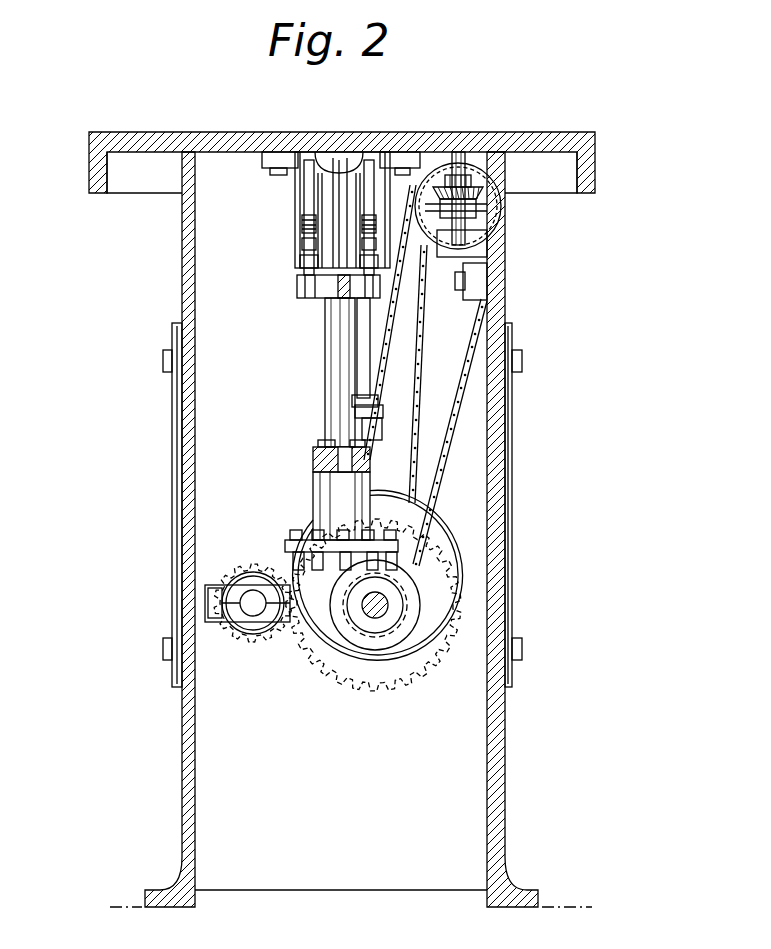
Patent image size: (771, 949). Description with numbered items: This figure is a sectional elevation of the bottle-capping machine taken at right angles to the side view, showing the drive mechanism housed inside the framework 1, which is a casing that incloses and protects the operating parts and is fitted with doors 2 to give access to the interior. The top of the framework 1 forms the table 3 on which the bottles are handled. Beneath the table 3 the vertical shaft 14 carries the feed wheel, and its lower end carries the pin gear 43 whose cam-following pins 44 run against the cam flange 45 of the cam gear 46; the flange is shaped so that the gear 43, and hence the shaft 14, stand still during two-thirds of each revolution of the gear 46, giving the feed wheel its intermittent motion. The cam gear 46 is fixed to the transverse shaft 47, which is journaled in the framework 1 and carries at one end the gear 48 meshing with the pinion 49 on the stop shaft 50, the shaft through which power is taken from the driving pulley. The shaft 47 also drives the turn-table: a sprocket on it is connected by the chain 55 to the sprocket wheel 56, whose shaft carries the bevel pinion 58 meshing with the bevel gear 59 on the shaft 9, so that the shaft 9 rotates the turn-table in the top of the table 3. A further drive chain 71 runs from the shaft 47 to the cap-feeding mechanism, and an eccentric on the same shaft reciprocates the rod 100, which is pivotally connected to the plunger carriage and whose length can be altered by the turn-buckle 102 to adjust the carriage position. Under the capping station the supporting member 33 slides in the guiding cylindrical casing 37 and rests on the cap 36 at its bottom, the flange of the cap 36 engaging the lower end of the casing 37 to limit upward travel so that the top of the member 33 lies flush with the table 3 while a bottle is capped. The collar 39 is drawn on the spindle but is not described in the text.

The framework 1 is at (498, 762).
The doors 2 is at (178, 583).
The table 3 is at (586, 148).
The shaft 9 is at (482, 232).
The shaft 14 is at (336, 361).
The supporting member 33 is at (301, 261).
The cap 36 is at (300, 270).
The guiding cylindrical casing 37 is at (301, 204).
The collar 39 is at (307, 299).
The gear 43 is at (291, 541).
The cam-following pins 44 is at (294, 558).
The cam flange 45 is at (408, 596).
The cam gear 46 is at (380, 622).
The transverse shaft 47 is at (390, 605).
The gear 48 is at (338, 664).
The pinion 49 is at (252, 618).
The stop shaft 50 is at (226, 628).
The chain 55 is at (447, 456).
The sprocket wheel 56 is at (400, 270).
The bevel pinion 58 is at (482, 207).
The bevel gear 59 is at (492, 190).
The drive chain 71 is at (422, 372).
The rod 100 is at (372, 390).
The turn-buckle 102 is at (380, 432).